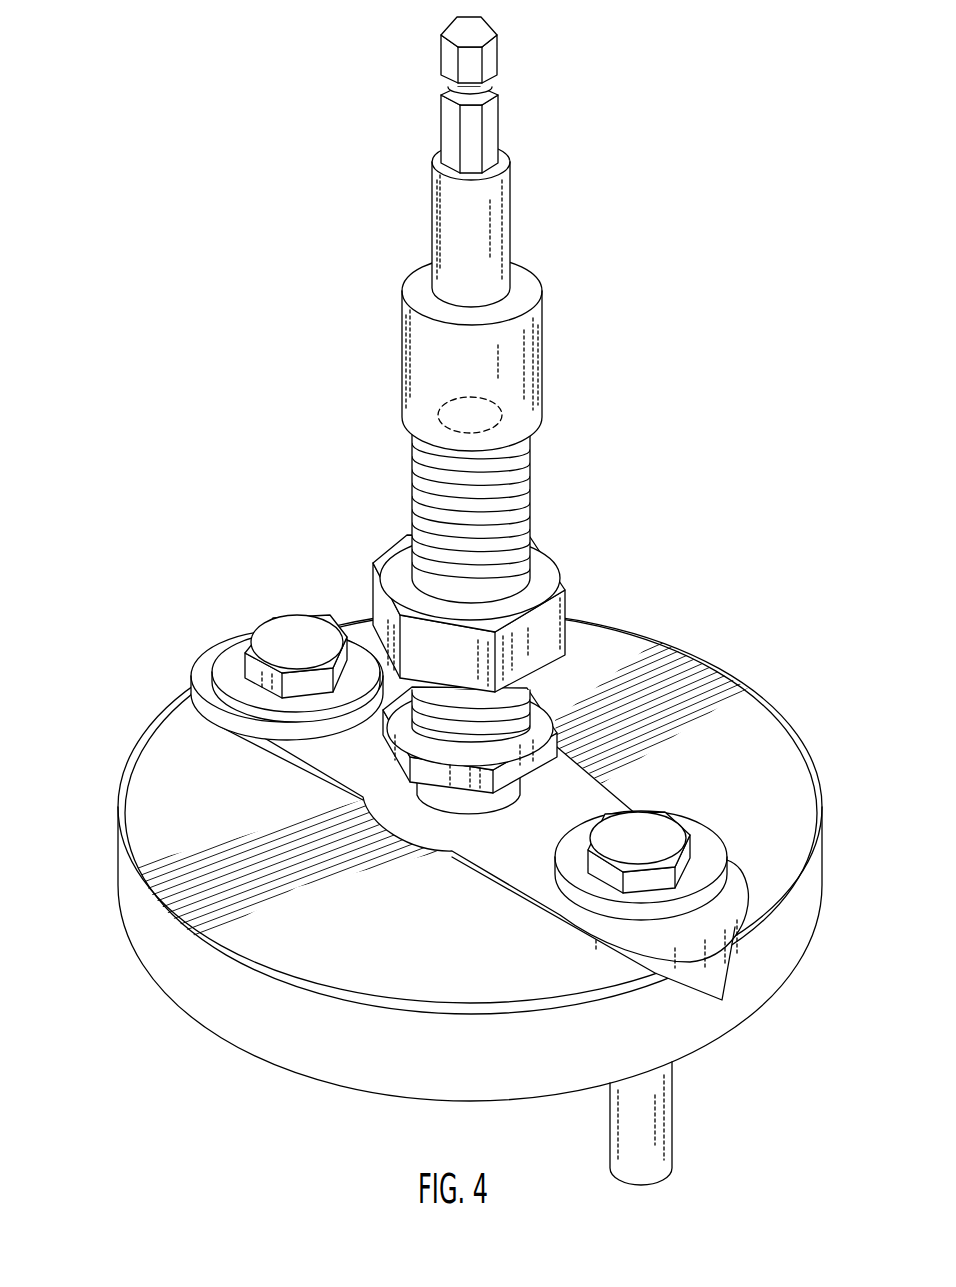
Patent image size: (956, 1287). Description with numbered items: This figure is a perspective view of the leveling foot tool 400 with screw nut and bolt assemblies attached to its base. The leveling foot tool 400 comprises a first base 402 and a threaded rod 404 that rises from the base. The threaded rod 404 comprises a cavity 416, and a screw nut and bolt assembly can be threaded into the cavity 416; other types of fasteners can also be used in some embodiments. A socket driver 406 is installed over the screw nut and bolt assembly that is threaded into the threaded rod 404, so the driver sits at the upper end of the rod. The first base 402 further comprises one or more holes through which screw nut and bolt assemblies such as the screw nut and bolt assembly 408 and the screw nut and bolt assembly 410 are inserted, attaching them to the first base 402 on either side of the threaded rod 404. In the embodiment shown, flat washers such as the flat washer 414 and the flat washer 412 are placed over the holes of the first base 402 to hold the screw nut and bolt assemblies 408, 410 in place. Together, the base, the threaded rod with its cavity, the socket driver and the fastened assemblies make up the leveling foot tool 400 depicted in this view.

The leveling foot tool 400 is at (378, 181).
The first base 402 is at (112, 872).
The threaded rod 404 is at (513, 509).
The socket driver 406 is at (502, 203).
The screw nut and bolt assembly 408 is at (298, 621).
The screw nut and bolt assembly 410 is at (648, 830).
The flat washer 412 is at (708, 862).
The flat washer 414 is at (232, 655).
The cavity 416 is at (496, 413).